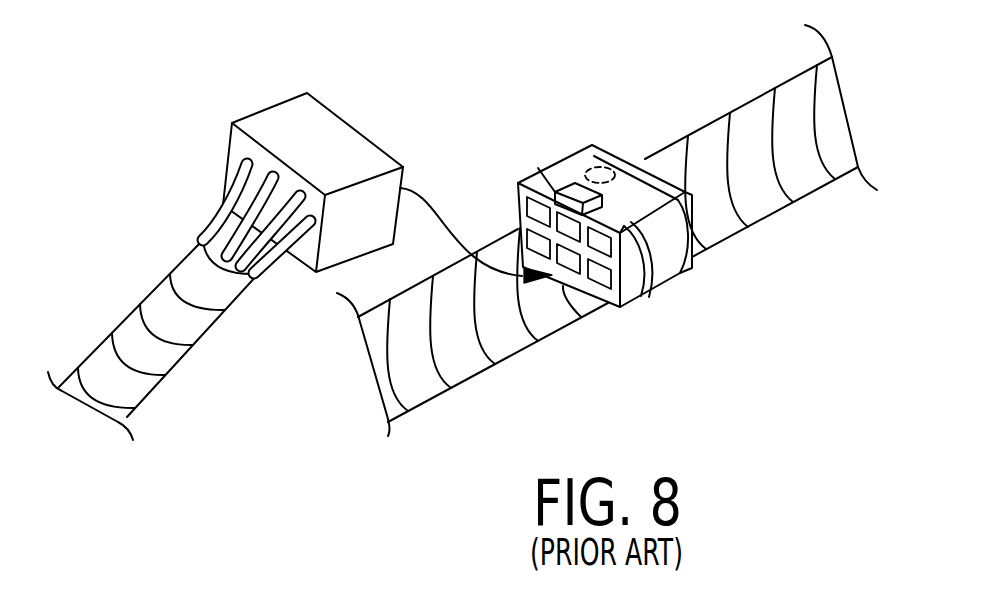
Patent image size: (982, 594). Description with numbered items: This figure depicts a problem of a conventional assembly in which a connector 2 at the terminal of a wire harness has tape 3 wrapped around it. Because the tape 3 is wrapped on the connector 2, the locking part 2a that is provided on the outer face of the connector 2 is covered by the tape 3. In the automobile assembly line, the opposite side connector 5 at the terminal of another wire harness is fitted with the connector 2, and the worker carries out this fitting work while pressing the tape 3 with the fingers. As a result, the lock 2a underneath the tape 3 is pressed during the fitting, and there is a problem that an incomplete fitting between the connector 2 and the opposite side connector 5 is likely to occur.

The connector 2 is at (611, 157).
The locking part 2a is at (586, 172).
The tape 3 is at (658, 273).
The opposite side connector 5 is at (340, 140).